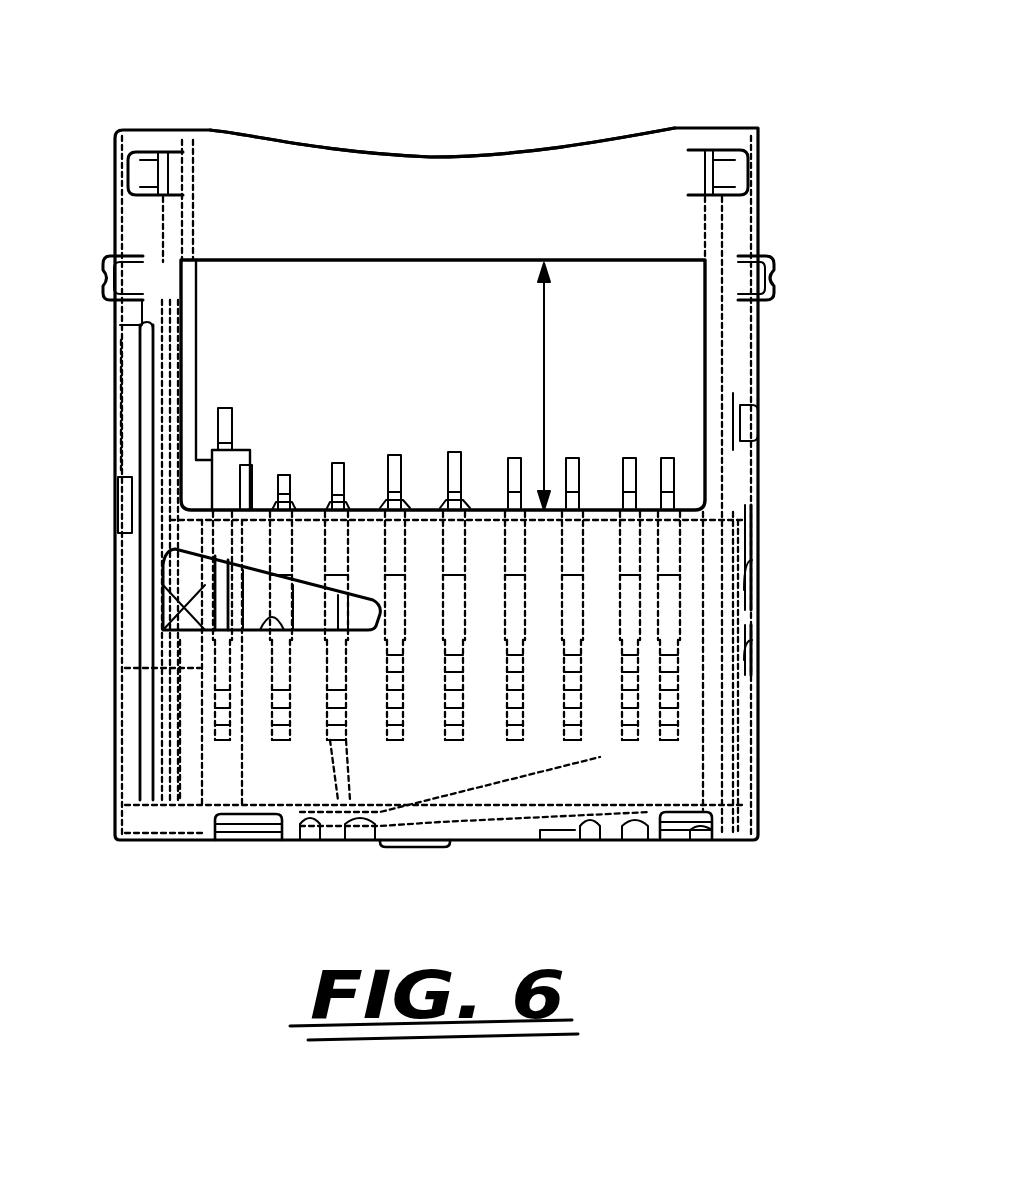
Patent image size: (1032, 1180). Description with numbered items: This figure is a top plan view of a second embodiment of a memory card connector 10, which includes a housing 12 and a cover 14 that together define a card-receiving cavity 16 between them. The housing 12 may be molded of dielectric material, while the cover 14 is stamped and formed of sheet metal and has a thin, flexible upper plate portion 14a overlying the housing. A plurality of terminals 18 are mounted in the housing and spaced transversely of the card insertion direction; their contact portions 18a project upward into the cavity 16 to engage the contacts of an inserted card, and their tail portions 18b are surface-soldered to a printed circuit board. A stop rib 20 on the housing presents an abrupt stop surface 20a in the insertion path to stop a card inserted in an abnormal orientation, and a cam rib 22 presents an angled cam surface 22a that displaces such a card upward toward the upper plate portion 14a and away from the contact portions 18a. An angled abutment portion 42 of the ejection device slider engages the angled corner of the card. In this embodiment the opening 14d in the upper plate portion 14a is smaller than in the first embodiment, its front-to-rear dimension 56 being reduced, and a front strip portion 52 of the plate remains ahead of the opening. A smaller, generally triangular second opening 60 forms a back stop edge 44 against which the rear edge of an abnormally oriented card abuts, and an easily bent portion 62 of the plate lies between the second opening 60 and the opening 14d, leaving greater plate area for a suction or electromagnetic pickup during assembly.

The memory card connector 10 is at (554, 120).
The housing 12 is at (745, 236).
The cover 14 is at (695, 208).
The upper plate portion 14a is at (484, 705).
The opening 14d is at (700, 372).
The card-receiving cavity 16 is at (454, 152).
The terminals 18 is at (346, 600).
The contact portions 18a is at (336, 760).
The tail portions 18b is at (455, 452).
The stop rib 20 is at (215, 770).
The abrupt stop surface 20a is at (247, 628).
The cam rib 22 is at (758, 726).
The angled cam surface 22a is at (758, 668).
The angled abutment portion 42 is at (175, 612).
The back stop edge 44 is at (262, 740).
The front strip portion 52 is at (465, 203).
The front-to-rear dimension 56 is at (547, 386).
The second opening 60 is at (177, 627).
The portion of the upper plate 62 is at (300, 610).